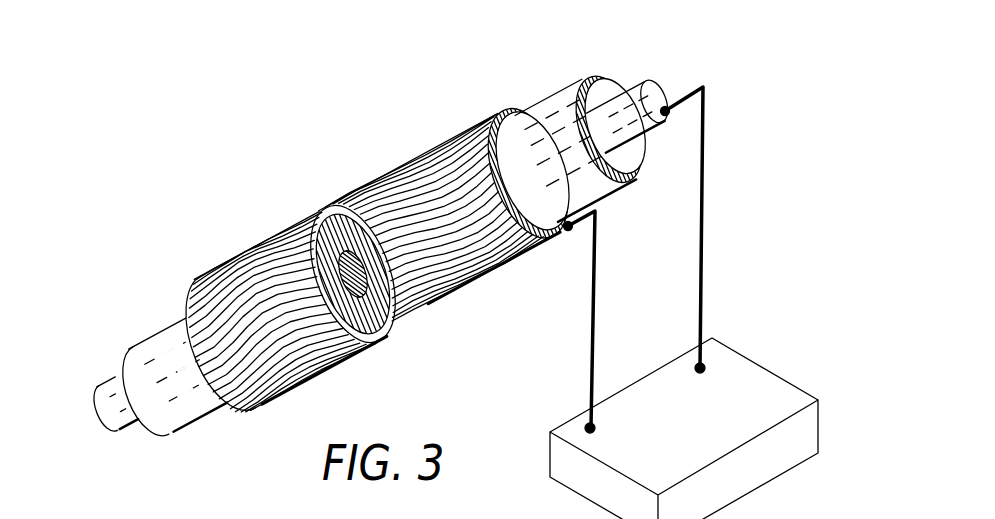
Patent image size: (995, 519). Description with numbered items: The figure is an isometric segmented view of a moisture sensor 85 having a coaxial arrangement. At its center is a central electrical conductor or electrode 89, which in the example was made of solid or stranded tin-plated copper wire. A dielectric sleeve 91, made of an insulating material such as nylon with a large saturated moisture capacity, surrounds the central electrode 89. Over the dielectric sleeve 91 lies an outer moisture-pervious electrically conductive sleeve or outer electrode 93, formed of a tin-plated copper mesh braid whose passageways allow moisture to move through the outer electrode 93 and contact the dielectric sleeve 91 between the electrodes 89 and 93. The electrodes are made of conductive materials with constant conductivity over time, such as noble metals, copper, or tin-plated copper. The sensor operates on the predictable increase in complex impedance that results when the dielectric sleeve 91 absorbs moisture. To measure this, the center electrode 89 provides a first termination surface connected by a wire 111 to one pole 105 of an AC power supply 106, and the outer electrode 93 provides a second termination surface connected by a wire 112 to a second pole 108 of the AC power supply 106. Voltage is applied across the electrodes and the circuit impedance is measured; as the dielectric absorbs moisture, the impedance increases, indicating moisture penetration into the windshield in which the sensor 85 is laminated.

The moisture sensor 85 is at (205, 156).
The central electrical conductor or electrode 89 is at (310, 217).
The dielectric sleeve 91 is at (347, 215).
The outer moisture pervious electrical conductive sleeve or outer electrode 93 is at (243, 253).
The pole of the AC power supply 105 is at (703, 366).
The AC power supply 106 is at (767, 393).
The second pole of the AC power supply 108 is at (583, 427).
The wire 111 is at (703, 258).
The wire 112 is at (592, 336).